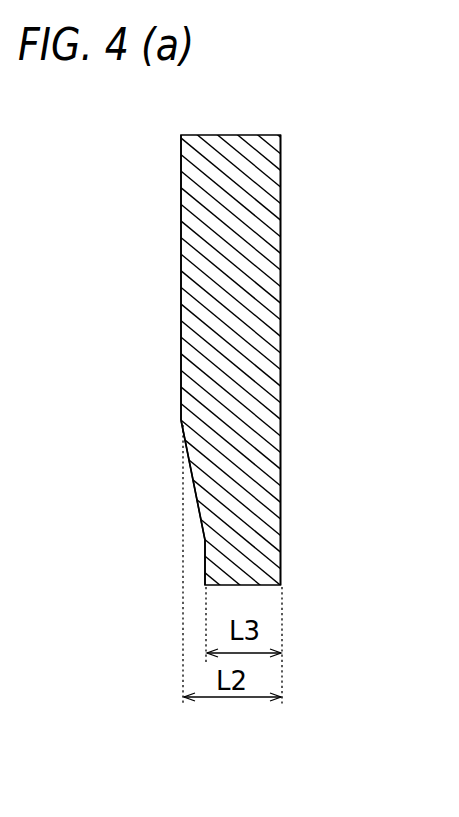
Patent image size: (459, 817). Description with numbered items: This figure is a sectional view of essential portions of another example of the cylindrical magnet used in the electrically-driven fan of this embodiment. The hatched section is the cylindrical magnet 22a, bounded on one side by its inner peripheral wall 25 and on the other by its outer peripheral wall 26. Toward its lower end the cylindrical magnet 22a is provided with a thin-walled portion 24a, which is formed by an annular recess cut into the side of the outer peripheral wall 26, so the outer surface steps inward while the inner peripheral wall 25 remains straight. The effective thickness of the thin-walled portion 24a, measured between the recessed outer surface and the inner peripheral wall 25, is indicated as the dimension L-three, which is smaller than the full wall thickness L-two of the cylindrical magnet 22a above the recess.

The cylindrical magnet 22a is at (276, 121).
The thin-walled portion 24a is at (188, 584).
The inner peripheral wall 25 is at (281, 323).
The outer peripheral wall 26 is at (181, 325).